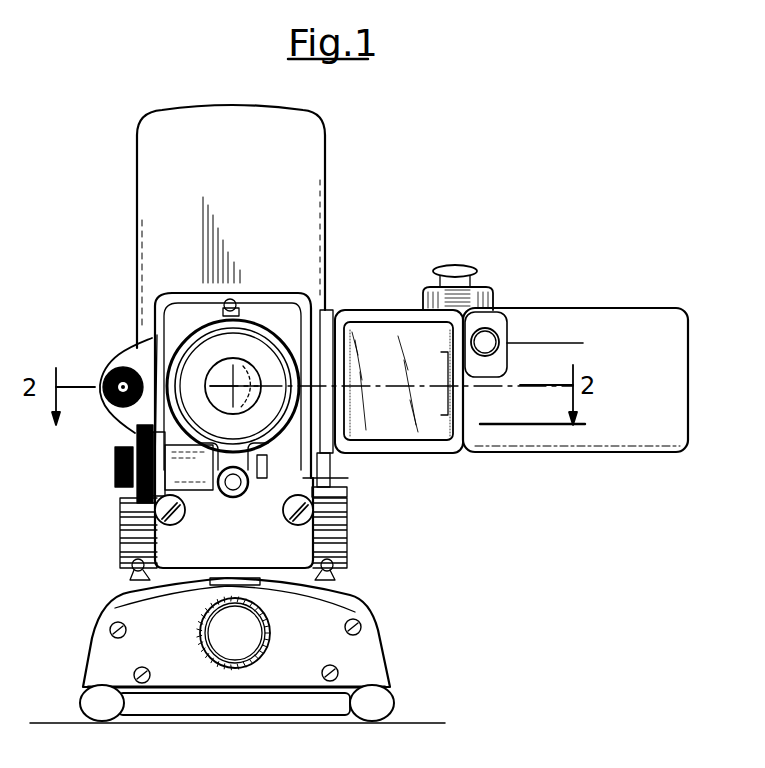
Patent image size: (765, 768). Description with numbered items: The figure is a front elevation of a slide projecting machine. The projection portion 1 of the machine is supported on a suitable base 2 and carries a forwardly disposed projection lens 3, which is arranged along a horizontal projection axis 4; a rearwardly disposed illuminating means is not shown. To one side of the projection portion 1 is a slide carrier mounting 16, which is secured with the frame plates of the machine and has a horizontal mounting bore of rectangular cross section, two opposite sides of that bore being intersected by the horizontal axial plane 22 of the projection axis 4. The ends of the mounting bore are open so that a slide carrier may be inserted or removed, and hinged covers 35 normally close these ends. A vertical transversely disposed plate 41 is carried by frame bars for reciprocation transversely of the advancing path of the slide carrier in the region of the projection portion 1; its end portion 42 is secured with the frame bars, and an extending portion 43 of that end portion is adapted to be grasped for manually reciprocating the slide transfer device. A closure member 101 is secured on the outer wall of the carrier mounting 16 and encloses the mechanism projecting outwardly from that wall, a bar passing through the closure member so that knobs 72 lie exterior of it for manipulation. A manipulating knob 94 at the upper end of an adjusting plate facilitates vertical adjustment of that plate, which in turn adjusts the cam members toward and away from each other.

The projection portion 1 is at (136, 192).
The base 2 is at (104, 611).
The projection lens 3 is at (246, 368).
The projection axis 4 is at (229, 383).
The slide carrier mounting 16 is at (386, 314).
The horizontal axial plane 22 is at (378, 388).
The hinged covers 35 is at (412, 440).
The plate 41 is at (160, 332).
The end portion 42 is at (158, 350).
The extending portion 43 is at (114, 400).
The knobs 72 is at (498, 340).
The manipulating knob 94 is at (474, 277).
The closure member 101 is at (600, 312).